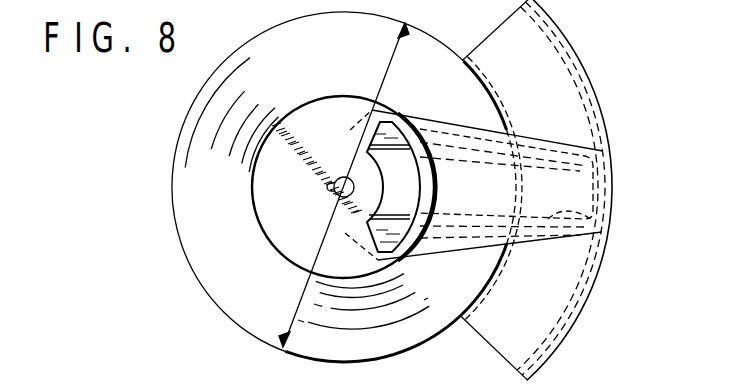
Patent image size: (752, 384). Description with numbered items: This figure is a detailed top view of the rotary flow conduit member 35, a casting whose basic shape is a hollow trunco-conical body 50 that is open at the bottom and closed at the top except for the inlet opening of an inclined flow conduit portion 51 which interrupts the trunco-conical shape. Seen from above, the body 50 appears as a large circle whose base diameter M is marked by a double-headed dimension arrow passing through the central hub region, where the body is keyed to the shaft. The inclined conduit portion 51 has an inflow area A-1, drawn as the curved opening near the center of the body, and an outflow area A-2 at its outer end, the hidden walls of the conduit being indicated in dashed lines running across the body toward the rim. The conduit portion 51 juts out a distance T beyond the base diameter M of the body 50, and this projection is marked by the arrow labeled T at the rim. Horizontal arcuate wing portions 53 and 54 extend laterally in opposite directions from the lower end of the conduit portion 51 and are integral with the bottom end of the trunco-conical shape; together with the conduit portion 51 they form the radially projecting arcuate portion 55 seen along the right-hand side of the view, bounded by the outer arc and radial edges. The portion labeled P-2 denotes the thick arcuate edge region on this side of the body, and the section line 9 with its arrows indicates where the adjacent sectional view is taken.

The disc 35 is at (250, 21).
The hollow trunco-conical body 50 is at (250, 62).
The inclined flow conduit portion 51 is at (512, 243).
The horizontal arcuate wing portion 53 is at (543, 315).
The horizontal arcuate wing portion 54 is at (553, 80).
The radially projecting arcuate portion 55 is at (601, 107).
The jutting distance T is at (452, 44).
The base diameter M is at (344, 185).
The inflow area A-1 is at (405, 185).
The outflow area A-2 is at (608, 220).
The segment P-2 is at (478, 293).
The section line 9- 9 is at (192, 183).